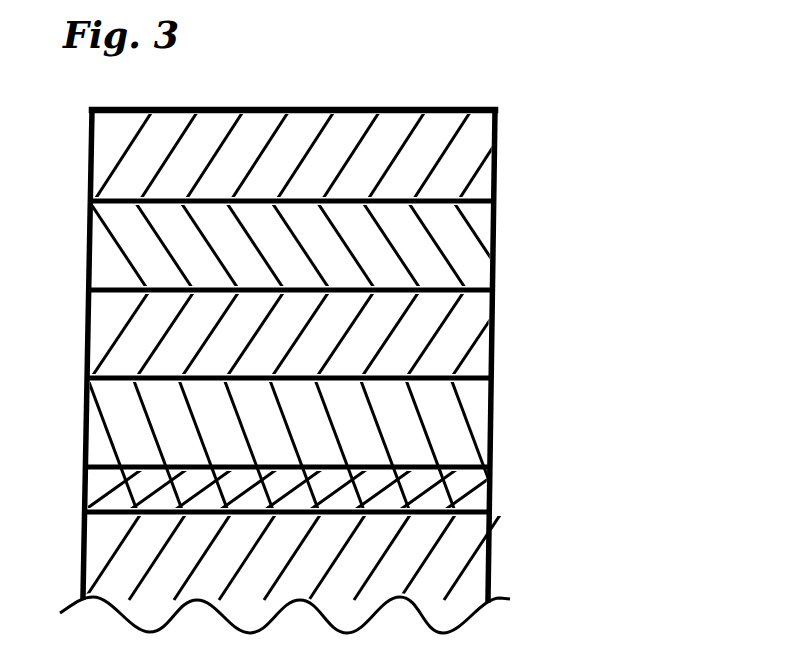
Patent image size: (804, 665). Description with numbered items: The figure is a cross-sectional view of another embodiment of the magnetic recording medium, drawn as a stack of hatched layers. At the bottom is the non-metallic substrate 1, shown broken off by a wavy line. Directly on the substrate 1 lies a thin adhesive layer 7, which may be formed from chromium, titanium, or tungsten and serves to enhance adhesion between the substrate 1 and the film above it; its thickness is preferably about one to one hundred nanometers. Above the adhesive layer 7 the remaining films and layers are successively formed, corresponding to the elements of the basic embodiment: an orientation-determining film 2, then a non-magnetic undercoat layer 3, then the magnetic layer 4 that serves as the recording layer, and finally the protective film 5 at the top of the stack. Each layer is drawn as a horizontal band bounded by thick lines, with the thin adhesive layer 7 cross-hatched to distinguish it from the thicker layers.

The non-metallic substrate 1 is at (507, 563).
The adhesive layer 7 is at (506, 503).
The orientation-determining film 2 is at (510, 432).
The non-magnetic undercoat layer 3 is at (513, 338).
The magnetic layer 4 is at (516, 252).
The protective film 5 is at (517, 163).